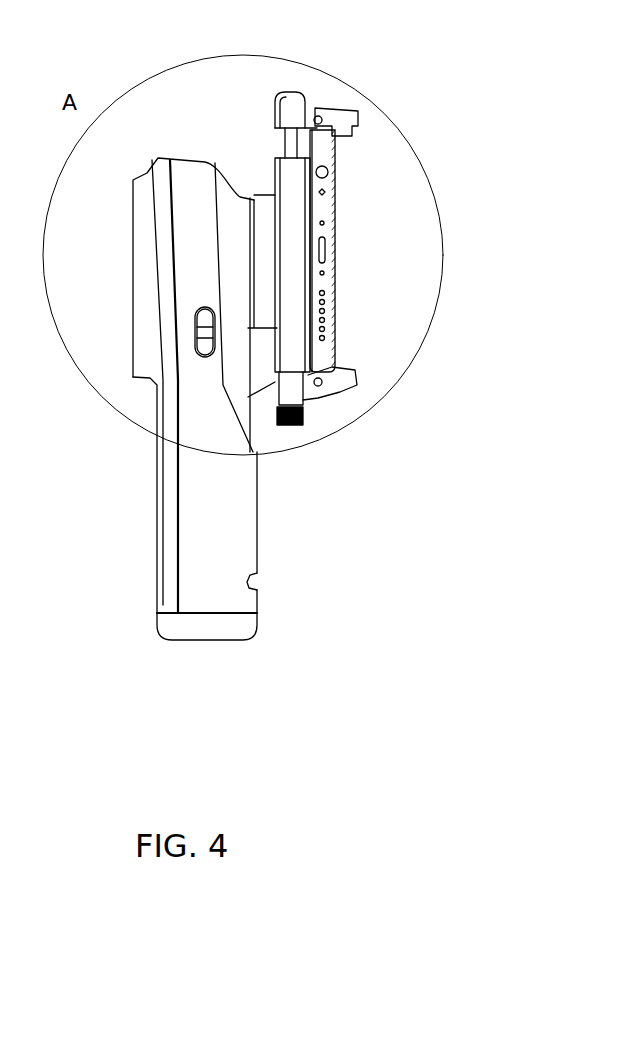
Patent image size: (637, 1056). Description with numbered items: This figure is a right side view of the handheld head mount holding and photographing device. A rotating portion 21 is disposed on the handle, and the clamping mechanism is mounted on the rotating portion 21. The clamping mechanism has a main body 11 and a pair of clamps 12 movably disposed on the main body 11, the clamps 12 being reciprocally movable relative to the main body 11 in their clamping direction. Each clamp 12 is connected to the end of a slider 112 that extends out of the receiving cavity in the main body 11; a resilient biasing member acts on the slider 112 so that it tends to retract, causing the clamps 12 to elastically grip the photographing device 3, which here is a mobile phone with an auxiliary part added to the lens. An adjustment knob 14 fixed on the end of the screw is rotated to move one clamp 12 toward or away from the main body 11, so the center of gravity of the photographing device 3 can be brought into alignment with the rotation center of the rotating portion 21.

The photographing device 3 is at (327, 208).
The main body 11 is at (295, 311).
The slider 112 is at (290, 140).
The clamp 12 is at (308, 113).
The adjustment knob 14 is at (303, 413).
The rotating portion 21 is at (265, 222).